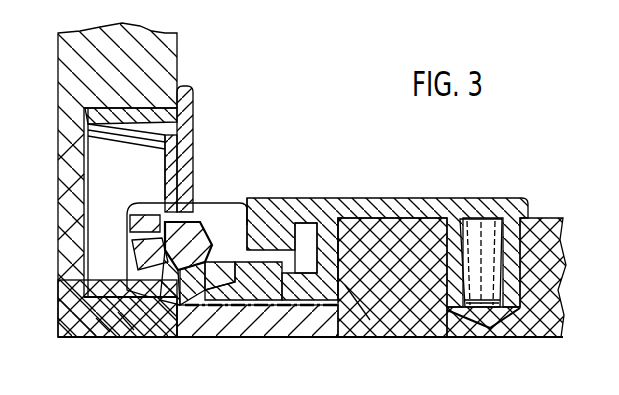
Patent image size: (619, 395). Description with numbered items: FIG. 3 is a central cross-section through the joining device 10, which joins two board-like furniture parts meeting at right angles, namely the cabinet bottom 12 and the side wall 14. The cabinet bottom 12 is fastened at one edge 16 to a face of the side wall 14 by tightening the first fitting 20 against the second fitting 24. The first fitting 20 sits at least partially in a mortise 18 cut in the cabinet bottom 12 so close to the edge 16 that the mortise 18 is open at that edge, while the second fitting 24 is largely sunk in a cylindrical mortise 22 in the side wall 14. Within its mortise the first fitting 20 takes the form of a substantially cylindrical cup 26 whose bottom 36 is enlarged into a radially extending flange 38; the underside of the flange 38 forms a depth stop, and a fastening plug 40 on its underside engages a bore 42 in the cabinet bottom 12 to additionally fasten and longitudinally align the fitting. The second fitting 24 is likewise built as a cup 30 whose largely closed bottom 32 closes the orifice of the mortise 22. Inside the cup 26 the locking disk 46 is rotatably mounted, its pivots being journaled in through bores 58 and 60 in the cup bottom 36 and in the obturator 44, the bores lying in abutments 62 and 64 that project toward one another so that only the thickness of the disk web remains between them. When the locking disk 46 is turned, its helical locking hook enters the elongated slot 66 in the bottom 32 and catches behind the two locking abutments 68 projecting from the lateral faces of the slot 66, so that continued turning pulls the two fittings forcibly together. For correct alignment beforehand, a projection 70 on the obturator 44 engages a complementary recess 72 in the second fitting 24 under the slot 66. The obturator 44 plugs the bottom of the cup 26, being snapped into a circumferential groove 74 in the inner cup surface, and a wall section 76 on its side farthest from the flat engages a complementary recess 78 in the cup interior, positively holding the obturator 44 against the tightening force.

The joining device 10 is at (306, 100).
The cabinet bottom 12 is at (537, 237).
The side wall 14 is at (178, 48).
The edge 16 is at (160, 336).
The mortise 18 is at (333, 300).
The first fitting 20 is at (389, 190).
The mortise 22 is at (84, 117).
The second fitting 24 is at (204, 104).
The cup 26 is at (350, 292).
The cup 30 is at (97, 286).
The bottom 32 is at (173, 158).
The bottom 36 is at (287, 208).
The flange 38 is at (423, 210).
The fastening plug 40 is at (512, 232).
The bore 42 is at (470, 312).
The obturator 44 is at (285, 293).
The locking disk 46 is at (217, 317).
The through bore 58 is at (231, 222).
The through bore 60 is at (190, 310).
The abutment 62 is at (252, 230).
The abutment 64 is at (238, 320).
The elongated slot 66 is at (120, 252).
The locking abutments 68 is at (122, 238).
The projection 70 is at (127, 336).
The recess 72 is at (103, 336).
The circumferential groove 74 is at (312, 290).
The wall section 76 is at (299, 238).
The recess 78 is at (331, 198).